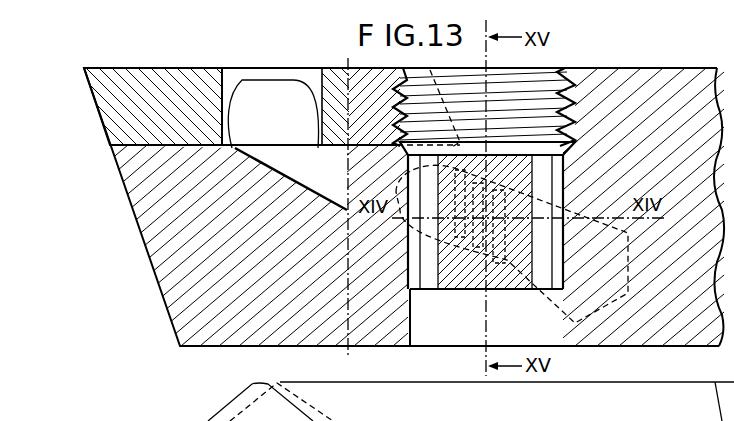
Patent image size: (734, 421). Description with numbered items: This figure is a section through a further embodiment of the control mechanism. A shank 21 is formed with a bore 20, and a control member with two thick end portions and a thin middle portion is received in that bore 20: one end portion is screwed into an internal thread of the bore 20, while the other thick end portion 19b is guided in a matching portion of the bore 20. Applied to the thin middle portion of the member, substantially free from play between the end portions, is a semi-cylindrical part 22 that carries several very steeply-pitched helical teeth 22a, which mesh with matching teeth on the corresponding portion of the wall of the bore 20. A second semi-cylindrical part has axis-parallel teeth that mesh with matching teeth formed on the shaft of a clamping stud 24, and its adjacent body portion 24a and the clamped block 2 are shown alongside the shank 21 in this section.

The clamping block 2 is at (153, 88).
The shank 21 is at (661, 88).
The clamping stud 24 is at (280, 163).
The threaded stud 24a is at (311, 160).
The semi-cylindrical part 22 is at (542, 273).
The helical teeth 22a is at (469, 290).
The end portion 19b is at (424, 327).
The bore 20 is at (560, 250).